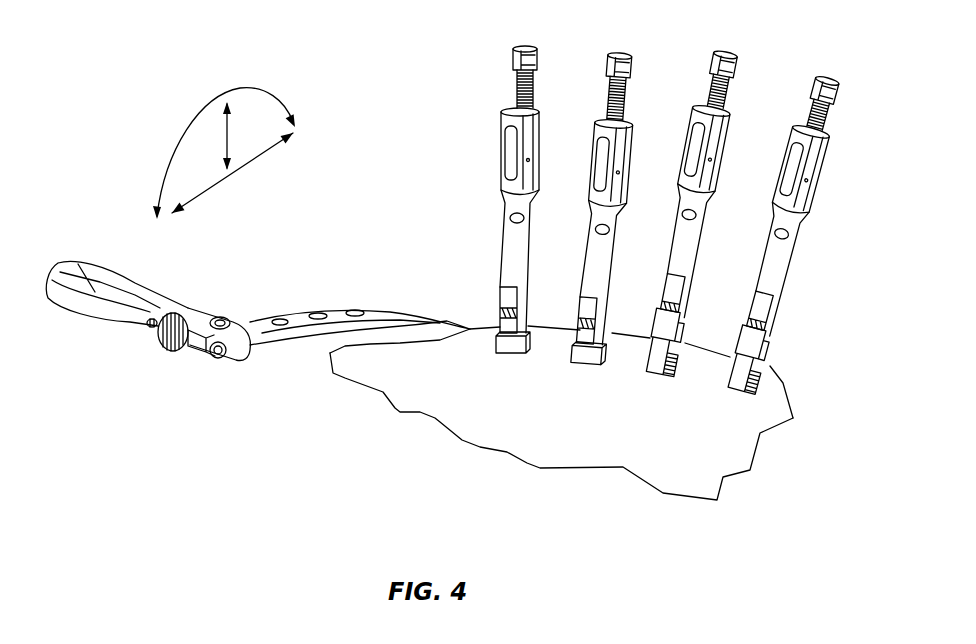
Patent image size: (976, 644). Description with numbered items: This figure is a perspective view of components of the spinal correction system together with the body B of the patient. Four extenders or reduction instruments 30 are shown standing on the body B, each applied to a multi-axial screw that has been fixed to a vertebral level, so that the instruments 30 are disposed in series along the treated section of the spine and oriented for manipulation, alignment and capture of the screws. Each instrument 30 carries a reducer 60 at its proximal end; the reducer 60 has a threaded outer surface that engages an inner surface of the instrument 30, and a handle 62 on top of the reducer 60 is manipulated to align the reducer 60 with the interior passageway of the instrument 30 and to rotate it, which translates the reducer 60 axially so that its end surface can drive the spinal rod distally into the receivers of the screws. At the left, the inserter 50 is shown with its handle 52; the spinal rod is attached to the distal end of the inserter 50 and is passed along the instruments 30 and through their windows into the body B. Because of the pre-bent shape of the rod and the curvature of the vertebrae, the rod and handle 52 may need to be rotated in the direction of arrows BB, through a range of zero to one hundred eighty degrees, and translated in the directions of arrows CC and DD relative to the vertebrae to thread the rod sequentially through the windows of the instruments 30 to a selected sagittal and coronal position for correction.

The instruments 30 is at (790, 177).
The reducer 60 is at (790, 104).
The handle 62 is at (822, 82).
The inserter 50 is at (250, 284).
The handle 52 is at (118, 276).
The body B is at (410, 392).
The arrows BB is at (224, 144).
The arrows CC is at (232, 173).
The arrows DD is at (242, 136).